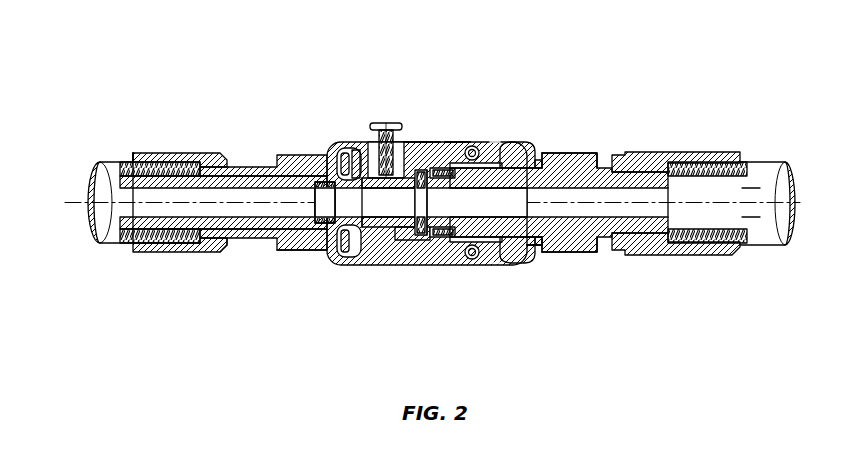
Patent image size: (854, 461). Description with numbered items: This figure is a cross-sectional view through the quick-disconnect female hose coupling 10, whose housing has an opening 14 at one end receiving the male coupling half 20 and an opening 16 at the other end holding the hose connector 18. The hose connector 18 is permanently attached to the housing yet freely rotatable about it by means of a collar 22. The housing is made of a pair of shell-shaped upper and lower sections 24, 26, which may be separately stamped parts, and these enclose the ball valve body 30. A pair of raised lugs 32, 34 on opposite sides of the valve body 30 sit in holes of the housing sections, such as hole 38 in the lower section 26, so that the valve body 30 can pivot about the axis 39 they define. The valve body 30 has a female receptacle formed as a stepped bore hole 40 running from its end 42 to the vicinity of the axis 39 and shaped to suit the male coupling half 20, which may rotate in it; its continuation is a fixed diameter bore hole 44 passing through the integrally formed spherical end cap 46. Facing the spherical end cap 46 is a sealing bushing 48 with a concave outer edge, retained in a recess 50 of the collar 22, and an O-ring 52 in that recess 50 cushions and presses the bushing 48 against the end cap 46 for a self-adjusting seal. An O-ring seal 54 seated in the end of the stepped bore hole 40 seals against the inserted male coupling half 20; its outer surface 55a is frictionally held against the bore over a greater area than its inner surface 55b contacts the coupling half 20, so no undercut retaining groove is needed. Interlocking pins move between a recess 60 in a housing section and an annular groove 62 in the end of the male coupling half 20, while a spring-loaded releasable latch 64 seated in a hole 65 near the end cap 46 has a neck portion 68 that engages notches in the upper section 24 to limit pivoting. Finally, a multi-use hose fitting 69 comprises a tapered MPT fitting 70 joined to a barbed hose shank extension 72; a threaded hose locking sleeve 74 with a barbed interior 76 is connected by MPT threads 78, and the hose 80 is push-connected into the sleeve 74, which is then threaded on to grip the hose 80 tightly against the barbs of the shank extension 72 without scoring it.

The hose coupling 10 is at (310, 80).
The opening 14 is at (580, 155).
The opening 16 is at (325, 148).
The hose connector 18 is at (283, 155).
The male coupling half 20 is at (580, 252).
The collar 22 is at (338, 265).
The upper housing section 24 is at (560, 155).
The lower housing section 26 is at (400, 266).
The ball valve body 30 is at (420, 266).
The raised lug 32 is at (460, 145).
The raised lug 34 is at (455, 266).
The hole 38 is at (428, 266).
The axis 39 is at (450, 145).
The stepped bore hole 40 is at (540, 158).
The end 42 is at (548, 256).
The fixed diameter bore hole 44 is at (388, 266).
The spherical end cap 46 is at (365, 268).
The sealing bushing 48 is at (345, 150).
The recess 50 is at (315, 258).
The O-ring 52 is at (290, 255).
The O-ring seal 54 is at (440, 263).
The outer surface 55a is at (473, 147).
The inner surface 55b is at (505, 259).
The recess 60 is at (498, 150).
The annular groove 62 is at (530, 262).
The releasable latch 64 is at (388, 123).
The hole 65 is at (363, 142).
The neck portion 68 is at (438, 142).
The multi-use hose fitting 69 is at (133, 146).
The tapered MPT fitting 70 is at (225, 254).
The barbed hose shank extension 72 is at (152, 252).
The threaded hose locking sleeve 74 is at (148, 252).
The barbed interior 76 is at (165, 153).
The MPT threads 78 is at (226, 153).
The hose 80 is at (100, 178).